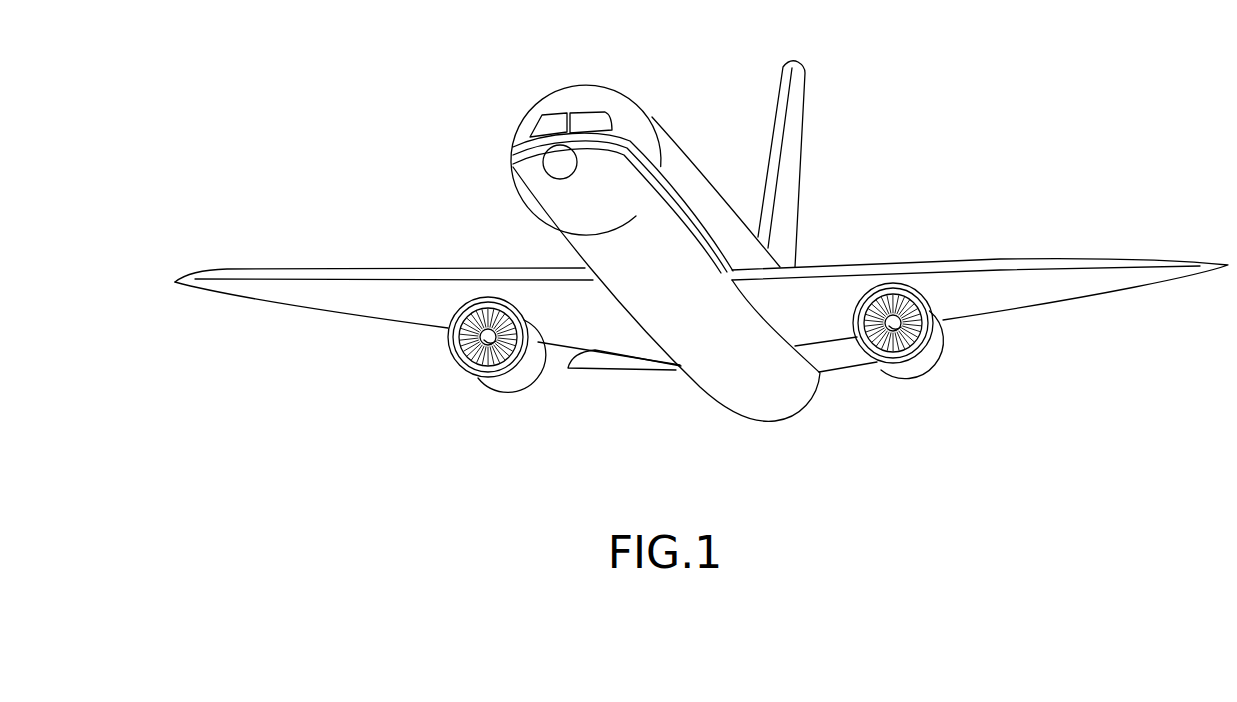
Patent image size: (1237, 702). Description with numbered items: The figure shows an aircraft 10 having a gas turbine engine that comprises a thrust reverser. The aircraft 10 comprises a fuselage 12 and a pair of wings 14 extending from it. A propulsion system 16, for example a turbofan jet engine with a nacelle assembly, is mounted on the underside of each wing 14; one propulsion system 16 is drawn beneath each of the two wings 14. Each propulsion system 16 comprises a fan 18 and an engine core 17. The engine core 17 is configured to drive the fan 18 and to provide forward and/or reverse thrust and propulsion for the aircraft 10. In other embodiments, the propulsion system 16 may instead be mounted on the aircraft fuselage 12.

The aircraft 10 is at (352, 104).
The fuselage 12 is at (674, 157).
The wings 14 is at (311, 268).
The propulsion system 16 is at (500, 388).
The engine core 17 is at (498, 345).
The fan 18 is at (478, 374).